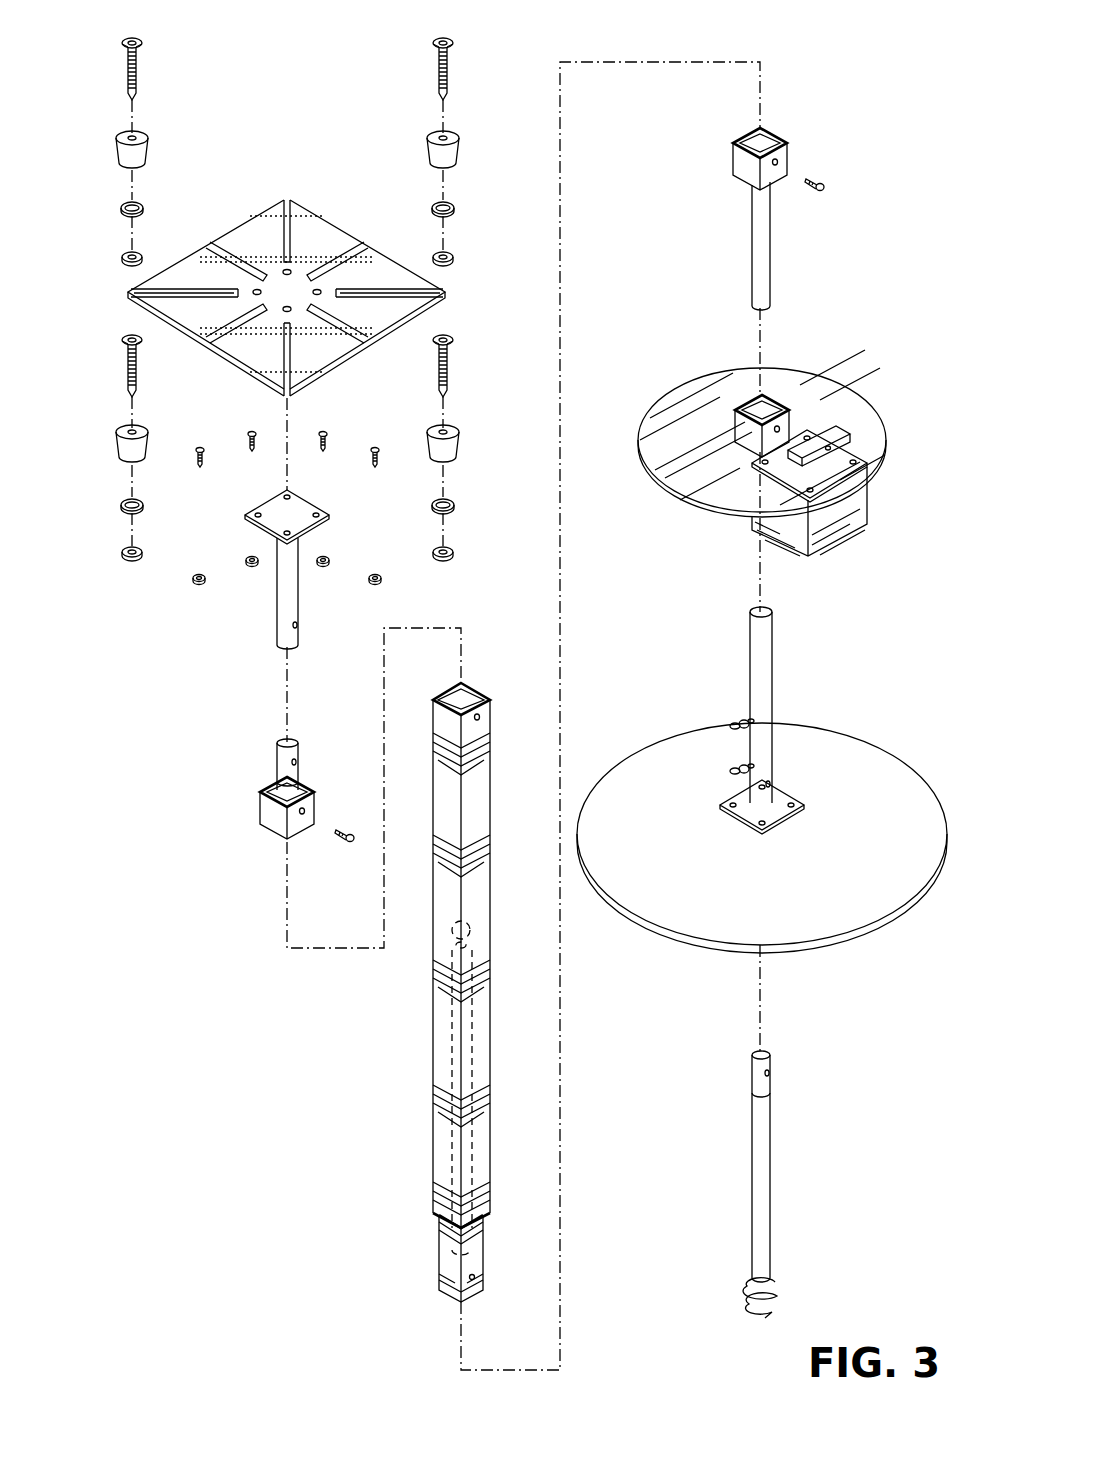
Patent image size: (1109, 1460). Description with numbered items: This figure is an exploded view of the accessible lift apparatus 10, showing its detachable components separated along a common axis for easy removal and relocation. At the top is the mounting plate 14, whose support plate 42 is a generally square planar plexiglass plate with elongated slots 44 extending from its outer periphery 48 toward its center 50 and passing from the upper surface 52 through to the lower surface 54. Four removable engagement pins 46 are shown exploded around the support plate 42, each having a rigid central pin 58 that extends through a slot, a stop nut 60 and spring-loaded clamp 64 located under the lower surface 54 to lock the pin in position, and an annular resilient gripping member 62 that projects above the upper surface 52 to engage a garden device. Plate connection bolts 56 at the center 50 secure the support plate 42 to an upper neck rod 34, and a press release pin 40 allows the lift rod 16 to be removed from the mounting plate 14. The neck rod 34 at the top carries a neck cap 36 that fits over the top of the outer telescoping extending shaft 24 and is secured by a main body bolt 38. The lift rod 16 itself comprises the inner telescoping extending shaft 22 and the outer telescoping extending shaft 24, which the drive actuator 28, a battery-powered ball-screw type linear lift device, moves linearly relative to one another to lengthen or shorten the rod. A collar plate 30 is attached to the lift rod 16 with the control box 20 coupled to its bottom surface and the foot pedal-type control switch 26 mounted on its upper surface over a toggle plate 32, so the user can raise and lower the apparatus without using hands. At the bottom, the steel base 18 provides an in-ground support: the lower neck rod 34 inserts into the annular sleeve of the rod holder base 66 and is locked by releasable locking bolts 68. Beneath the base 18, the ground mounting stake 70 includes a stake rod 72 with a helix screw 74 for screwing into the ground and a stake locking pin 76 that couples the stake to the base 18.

The accessible lift apparatus 10 is at (870, 49).
The mounting plate 14 is at (151, 615).
The lift rod 16 is at (429, 1025).
The base 18 is at (631, 754).
The control box 20 is at (868, 505).
The inner telescoping extending shaft 22 is at (438, 1255).
The outer telescoping extending shaft 24 is at (431, 1063).
The control switch 26 is at (840, 442).
The drive actuator 28 is at (450, 1160).
The collar plate 30 is at (654, 396).
The toggle plate 32 is at (815, 433).
The neck rod 34 is at (277, 600).
The neck cap 36 is at (257, 805).
The main body bolt 38 is at (345, 841).
The press release pin 40 is at (297, 762).
The support plate 42 is at (325, 216).
The elongated slots 44 is at (366, 289).
The engagement pins 46 is at (154, 114).
The outer periphery 48 is at (327, 370).
The center 50 is at (287, 290).
The upper surface 52 is at (276, 222).
The lower surface 54 is at (267, 381).
The plate connection bolts 56 is at (390, 480).
The rigid central pin 58 is at (127, 63).
The stop nut 60 is at (122, 257).
The annular resilient gripping member 62 is at (116, 148).
The spring-loaded clamp 64 is at (121, 208).
The rod holder base 66 is at (772, 695).
The releasable locking bolts 68 is at (738, 722).
The ground mounting stake 70 is at (778, 1180).
The stake rod 72 is at (771, 1145).
The helix screw 74 is at (772, 1288).
The stake locking pin 76 is at (769, 1072).